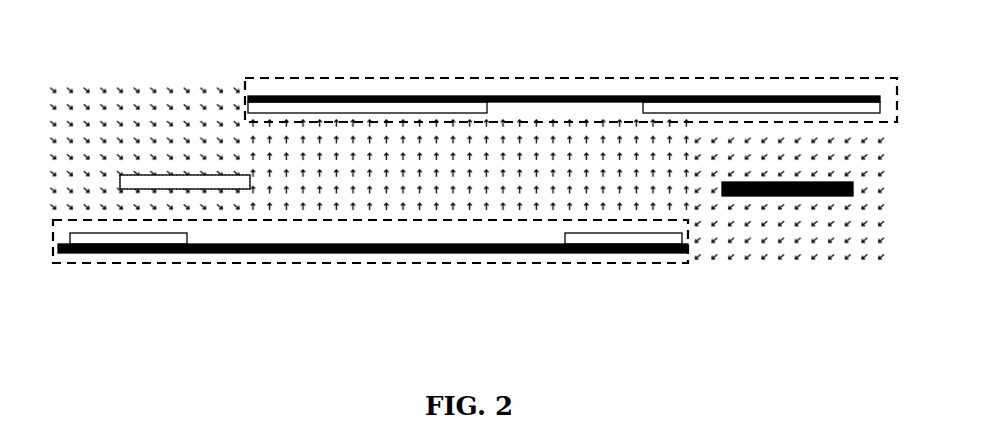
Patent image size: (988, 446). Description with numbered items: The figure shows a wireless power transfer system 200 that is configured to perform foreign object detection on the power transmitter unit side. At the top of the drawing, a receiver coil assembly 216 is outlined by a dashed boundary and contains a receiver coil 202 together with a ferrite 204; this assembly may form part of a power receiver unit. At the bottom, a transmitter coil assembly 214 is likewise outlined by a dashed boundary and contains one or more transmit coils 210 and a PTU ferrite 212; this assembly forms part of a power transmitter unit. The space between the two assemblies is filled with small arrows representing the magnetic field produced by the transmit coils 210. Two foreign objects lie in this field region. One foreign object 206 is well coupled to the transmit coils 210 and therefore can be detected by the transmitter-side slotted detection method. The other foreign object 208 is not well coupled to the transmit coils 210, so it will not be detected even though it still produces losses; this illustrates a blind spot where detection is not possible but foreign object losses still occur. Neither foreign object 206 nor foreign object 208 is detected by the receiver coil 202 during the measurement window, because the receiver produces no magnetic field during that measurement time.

The wireless power transfer system 200 is at (497, 327).
The receiver coil 202 is at (246, 104).
The ferrite 204 is at (538, 97).
The foreign object 206 is at (130, 175).
The foreign object 208 is at (787, 197).
The transmit coil 210 is at (56, 238).
The PTU ferrite 212 is at (213, 254).
The transmitter coil assembly 214 is at (377, 265).
The receiver coil assembly 216 is at (432, 78).